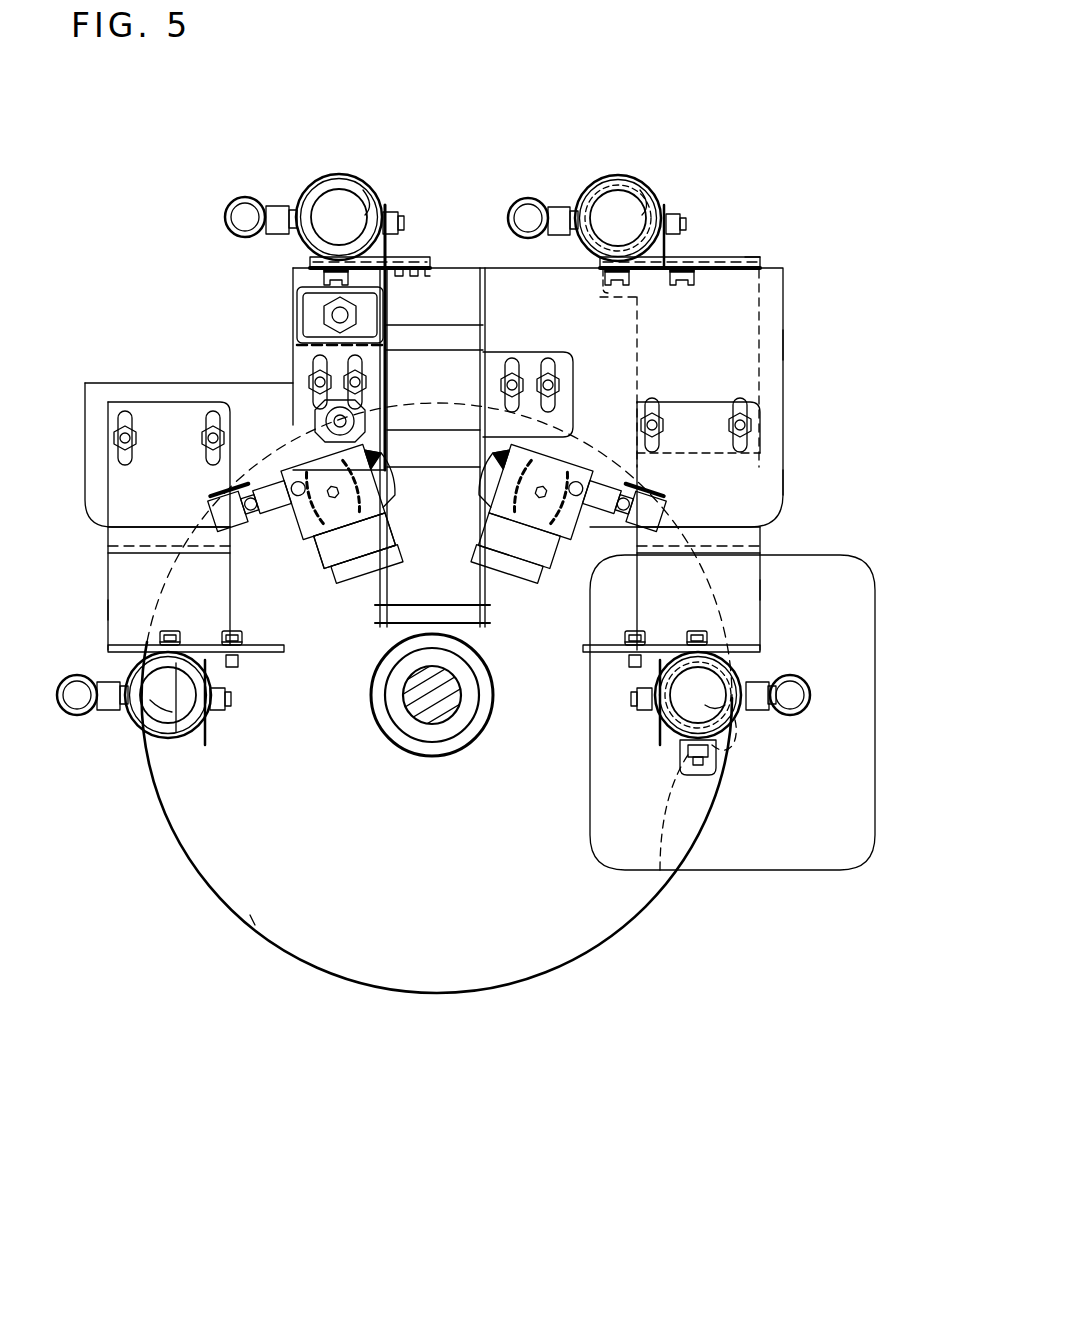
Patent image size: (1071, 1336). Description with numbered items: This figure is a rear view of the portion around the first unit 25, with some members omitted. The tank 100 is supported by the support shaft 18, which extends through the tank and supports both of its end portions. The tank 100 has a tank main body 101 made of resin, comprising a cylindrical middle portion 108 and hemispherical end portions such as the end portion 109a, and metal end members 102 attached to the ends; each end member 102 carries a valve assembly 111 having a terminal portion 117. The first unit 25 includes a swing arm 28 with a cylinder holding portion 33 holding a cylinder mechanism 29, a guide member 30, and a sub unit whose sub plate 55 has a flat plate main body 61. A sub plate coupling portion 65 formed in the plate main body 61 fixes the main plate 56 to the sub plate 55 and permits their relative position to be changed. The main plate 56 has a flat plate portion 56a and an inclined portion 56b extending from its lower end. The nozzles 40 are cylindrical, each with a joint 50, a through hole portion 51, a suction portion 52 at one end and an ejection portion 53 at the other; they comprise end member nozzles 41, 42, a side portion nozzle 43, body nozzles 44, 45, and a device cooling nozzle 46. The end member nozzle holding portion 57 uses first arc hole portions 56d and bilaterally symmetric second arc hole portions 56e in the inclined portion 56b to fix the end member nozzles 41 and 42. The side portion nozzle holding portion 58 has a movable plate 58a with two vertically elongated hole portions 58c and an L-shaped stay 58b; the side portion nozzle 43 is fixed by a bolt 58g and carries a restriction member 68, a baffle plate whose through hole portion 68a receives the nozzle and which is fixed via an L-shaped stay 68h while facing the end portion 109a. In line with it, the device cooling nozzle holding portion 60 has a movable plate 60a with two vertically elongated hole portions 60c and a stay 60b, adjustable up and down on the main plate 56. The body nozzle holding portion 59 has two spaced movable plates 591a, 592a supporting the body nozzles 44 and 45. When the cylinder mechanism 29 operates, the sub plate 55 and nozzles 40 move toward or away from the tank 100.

The support shaft 18 is at (435, 719).
The first unit 25 is at (783, 150).
The swing arm 28 is at (505, 728).
The cylinder mechanism 29 is at (300, 455).
The guide member 30 is at (333, 317).
The cylinder holding portion 33 is at (318, 442).
The nozzle 40 is at (359, 149).
The end member nozzle 41 is at (332, 577).
The end member nozzle 42 is at (542, 577).
The side portion nozzle 43 is at (730, 703).
The body nozzle 44 is at (338, 176).
The body nozzle 45 is at (614, 176).
The device cooling nozzle 46 is at (187, 703).
The joint 50 is at (245, 197).
The through hole portion 51 is at (635, 210).
The suction portion 52 is at (682, 256).
The ejection portion 53 is at (197, 717).
The sub plate 55 is at (383, 267).
The main plate 56 is at (510, 285).
The flat plate portion 56a is at (782, 345).
The inclined portion 56b is at (780, 480).
The first arc hole portion 56d is at (300, 530).
The second arc hole portion 56e is at (500, 530).
The end member nozzle holding portion 57 is at (412, 510).
The side portion nozzle holding portion 58 is at (750, 538).
The movable plate 58a is at (755, 585).
The stay 58b is at (640, 668).
The vertically elongated hole portion 58c is at (655, 410).
The bolt 58g is at (707, 630).
The body nozzle holding portion 59 is at (390, 262).
The device cooling nozzle holding portion 60 is at (108, 580).
The movable plate 60a is at (108, 607).
The stay 60b is at (110, 647).
The vertically elongated hole portion 60c is at (215, 445).
The plate main body 61 is at (297, 367).
The sub plate coupling portion 65 is at (568, 378).
The restriction member 68 is at (790, 870).
The through hole portion 68a is at (660, 870).
The stay 68h is at (700, 775).
The tank 100 is at (212, 906).
The tank main body 101 is at (242, 923).
The end member 102 is at (393, 748).
The middle portion 108 is at (337, 970).
The end portion 109a is at (420, 783).
The valve assembly 111 is at (470, 738).
The terminal portion 117 is at (482, 724).
The movable plate 591a is at (365, 222).
The movable plate 592a is at (750, 256).